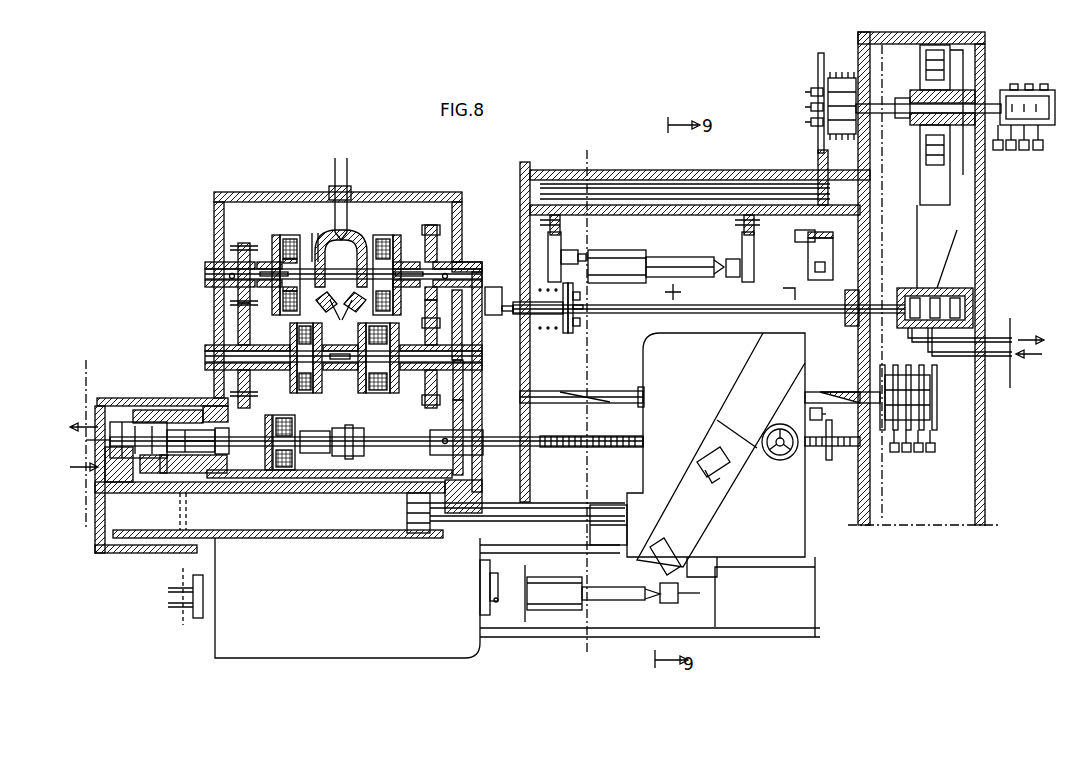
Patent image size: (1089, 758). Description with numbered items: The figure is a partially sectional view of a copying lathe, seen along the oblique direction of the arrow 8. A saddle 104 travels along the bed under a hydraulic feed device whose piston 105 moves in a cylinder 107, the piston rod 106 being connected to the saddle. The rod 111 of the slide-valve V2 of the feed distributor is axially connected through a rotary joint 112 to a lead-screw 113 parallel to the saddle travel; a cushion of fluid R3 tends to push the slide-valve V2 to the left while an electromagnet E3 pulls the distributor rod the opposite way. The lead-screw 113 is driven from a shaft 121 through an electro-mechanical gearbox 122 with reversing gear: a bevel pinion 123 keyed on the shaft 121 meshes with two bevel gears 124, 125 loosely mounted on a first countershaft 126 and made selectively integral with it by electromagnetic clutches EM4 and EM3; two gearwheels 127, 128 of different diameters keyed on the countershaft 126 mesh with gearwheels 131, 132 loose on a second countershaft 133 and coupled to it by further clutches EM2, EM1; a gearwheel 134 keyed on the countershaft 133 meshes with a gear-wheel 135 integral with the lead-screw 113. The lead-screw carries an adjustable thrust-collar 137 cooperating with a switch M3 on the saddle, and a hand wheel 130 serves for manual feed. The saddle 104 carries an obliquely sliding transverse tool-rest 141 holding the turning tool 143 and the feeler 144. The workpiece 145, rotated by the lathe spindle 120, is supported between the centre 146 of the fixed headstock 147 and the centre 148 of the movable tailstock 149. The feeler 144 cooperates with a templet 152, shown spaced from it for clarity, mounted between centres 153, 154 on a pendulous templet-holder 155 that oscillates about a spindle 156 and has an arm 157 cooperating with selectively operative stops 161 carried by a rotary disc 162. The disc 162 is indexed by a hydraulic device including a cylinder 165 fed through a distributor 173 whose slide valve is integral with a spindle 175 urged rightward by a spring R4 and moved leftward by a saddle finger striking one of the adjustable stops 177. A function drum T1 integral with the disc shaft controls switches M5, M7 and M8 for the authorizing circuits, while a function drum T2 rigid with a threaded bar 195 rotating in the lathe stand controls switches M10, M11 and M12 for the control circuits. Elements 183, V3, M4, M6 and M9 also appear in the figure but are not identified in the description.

The arrow 8 is at (155, 398).
The saddle 104 is at (660, 462).
The piston 105 is at (422, 534).
The piston rod 106 is at (488, 522).
The cylinder 107 is at (276, 538).
The distributor rod 111 is at (318, 453).
The rotary joint 112 is at (356, 458).
The lead-screw 113 is at (576, 447).
The spindle 120 is at (180, 598).
The shaft 121 is at (344, 150).
The electro-mechanical gearbox 122 is at (230, 192).
The bevel pinion 123 is at (364, 186).
The bevel gear 124 is at (315, 235).
The bevel gear 125 is at (336, 250).
The first countershaft 126 is at (205, 274).
The gearwheel 127 is at (238, 246).
The gearwheel 128 is at (431, 225).
The hand wheel 130 is at (772, 456).
The gearwheel 131 is at (240, 332).
The gearwheel 132 is at (425, 340).
The second countershaft 133 is at (205, 356).
The gearwheel 134 is at (462, 376).
The gear-wheel 135 is at (462, 410).
The thrust-collar 137 is at (830, 460).
The transverse tool-rest 141 is at (717, 446).
The turning tool 143 is at (652, 572).
The feeler 144 is at (722, 482).
The workpiece 145 is at (608, 600).
The headstock centre 146 is at (495, 603).
The fixed headstock 147 is at (406, 640).
The tailstock centre 148 is at (672, 598).
The movable tailstock 149 is at (790, 604).
The templet 152 is at (665, 260).
The centre 153 is at (730, 262).
The centre 154 is at (578, 257).
The templet-holder 155 is at (755, 178).
The spindle 156 is at (632, 186).
The arm 157 is at (818, 70).
The stops 161 is at (805, 110).
The rotary disc 162 is at (840, 78).
The cylinder 165 is at (935, 205).
The distributor 173 is at (986, 330).
The spindle 175 is at (630, 313).
The adjustable stops 177 is at (576, 328).
The axis 183 is at (884, 178).
The bar 195 is at (642, 394).
The electromagnetic clutch EM1 is at (394, 394).
The electromagnetic clutch EM2 is at (318, 398).
The electromagnetic clutch EM3 is at (388, 236).
The electromagnetic clutch EM4 is at (296, 222).
The electromagnet E3 is at (284, 414).
The cushion of fluid R3 is at (140, 422).
The spring R4 is at (548, 320).
The slide-valve V2 is at (182, 436).
The valve V3 is at (948, 292).
The switch M3 is at (828, 412).
The motor M4 is at (494, 287).
The switch M5 is at (998, 150).
The contact M6 is at (1011, 150).
The switch M7 is at (1025, 150).
The switch M8 is at (1040, 150).
The contact M9 is at (892, 452).
The switch M10 is at (906, 452).
The switch M11 is at (918, 452).
The switch M12 is at (935, 448).
The function drum T1 is at (1055, 100).
The rotary function drum T2 is at (937, 400).